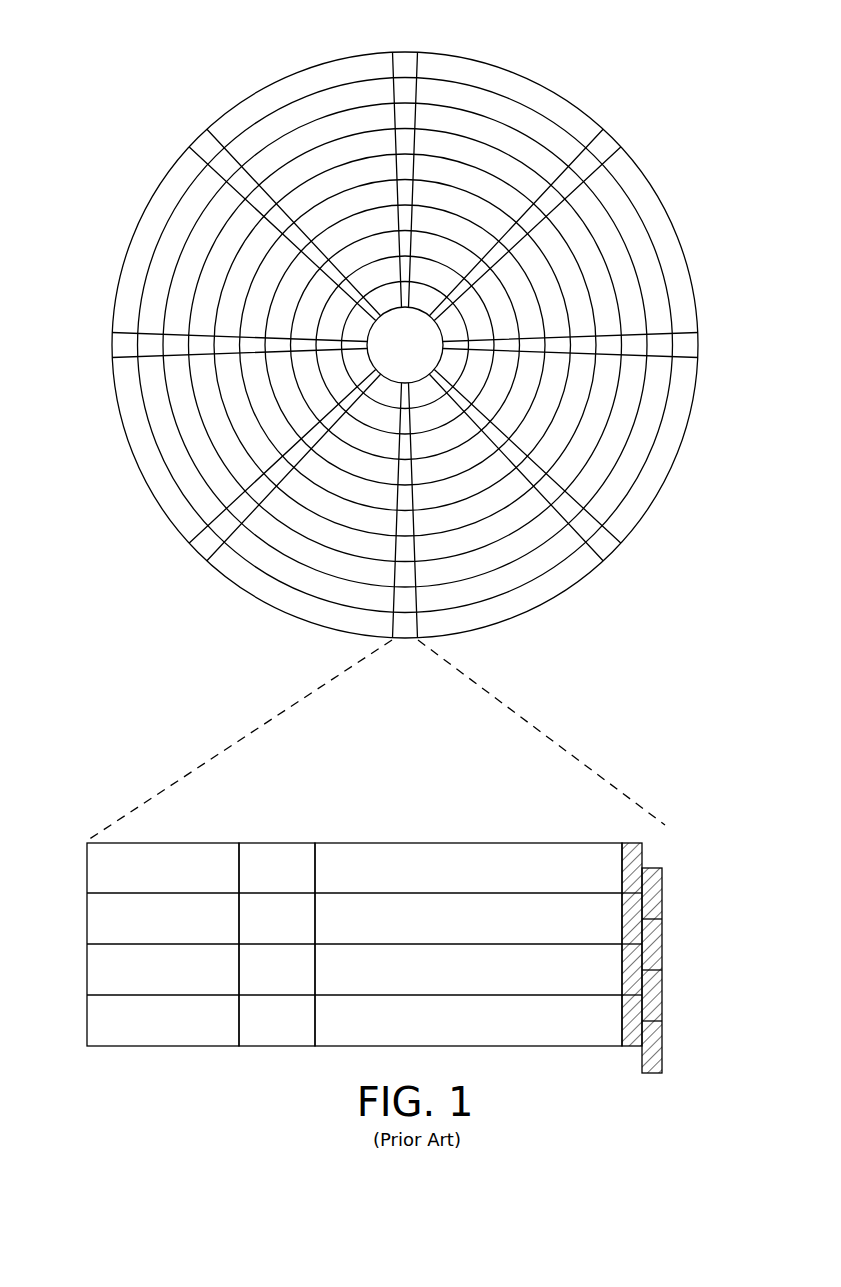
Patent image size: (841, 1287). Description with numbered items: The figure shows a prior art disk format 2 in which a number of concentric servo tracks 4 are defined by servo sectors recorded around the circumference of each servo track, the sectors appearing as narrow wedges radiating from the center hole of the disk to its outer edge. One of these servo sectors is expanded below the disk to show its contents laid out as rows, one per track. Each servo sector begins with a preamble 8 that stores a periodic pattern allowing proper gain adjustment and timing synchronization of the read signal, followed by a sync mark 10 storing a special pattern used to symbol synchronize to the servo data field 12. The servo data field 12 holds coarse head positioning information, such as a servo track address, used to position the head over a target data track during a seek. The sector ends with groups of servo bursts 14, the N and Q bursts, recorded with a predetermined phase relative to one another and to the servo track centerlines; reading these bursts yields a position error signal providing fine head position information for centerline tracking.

The disk format 2 is at (190, 57).
The servo tracks 4 is at (506, 113).
The preamble 8 is at (170, 842).
The sync mark 10 is at (281, 842).
The servo data field 12 is at (459, 842).
The servo bursts 14 is at (658, 842).